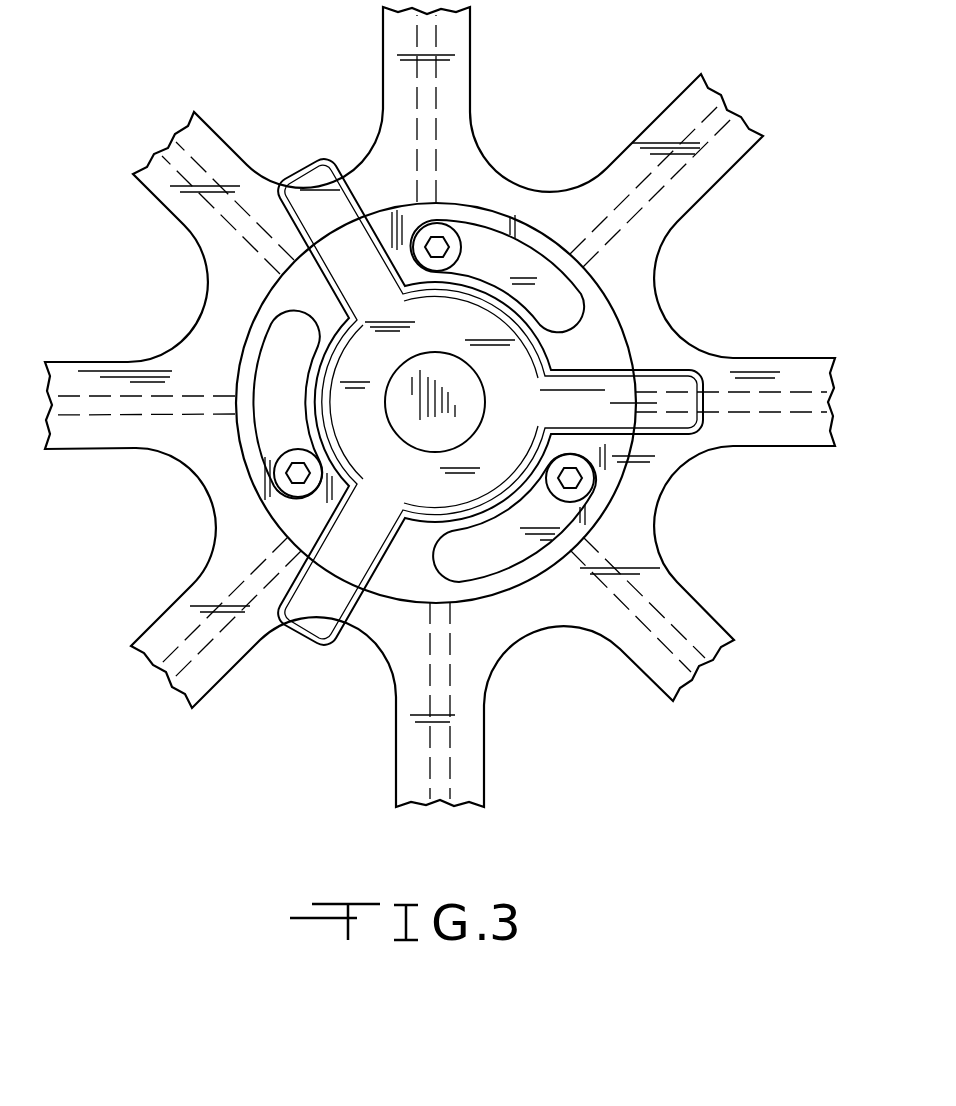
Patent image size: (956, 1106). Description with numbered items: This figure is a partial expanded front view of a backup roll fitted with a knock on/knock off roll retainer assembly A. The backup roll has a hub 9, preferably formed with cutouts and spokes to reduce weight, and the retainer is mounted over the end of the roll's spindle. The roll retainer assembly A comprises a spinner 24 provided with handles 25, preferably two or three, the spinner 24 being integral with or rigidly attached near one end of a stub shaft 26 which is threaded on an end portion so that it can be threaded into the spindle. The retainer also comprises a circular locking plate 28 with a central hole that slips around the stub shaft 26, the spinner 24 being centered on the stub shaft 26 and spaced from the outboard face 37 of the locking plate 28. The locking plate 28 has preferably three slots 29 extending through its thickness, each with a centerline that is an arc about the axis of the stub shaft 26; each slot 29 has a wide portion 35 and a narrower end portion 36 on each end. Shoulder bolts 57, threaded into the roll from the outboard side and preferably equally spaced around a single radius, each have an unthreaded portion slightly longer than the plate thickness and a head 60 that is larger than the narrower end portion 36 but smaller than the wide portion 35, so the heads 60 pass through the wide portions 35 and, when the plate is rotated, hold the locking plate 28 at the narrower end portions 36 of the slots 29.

The hub 9 is at (673, 187).
The spinner 24 is at (437, 372).
The handle 25 is at (302, 185).
The stub shaft 26 is at (417, 423).
The locking plate 28 is at (243, 364).
The slot 29 is at (556, 552).
The wide portion 35 is at (543, 258).
The narrower end portion 36 is at (452, 222).
The outboard face 37 is at (300, 520).
The shoulder bolt 57 is at (312, 292).
The head 60 is at (283, 318).
The roll retainer assembly A is at (614, 506).